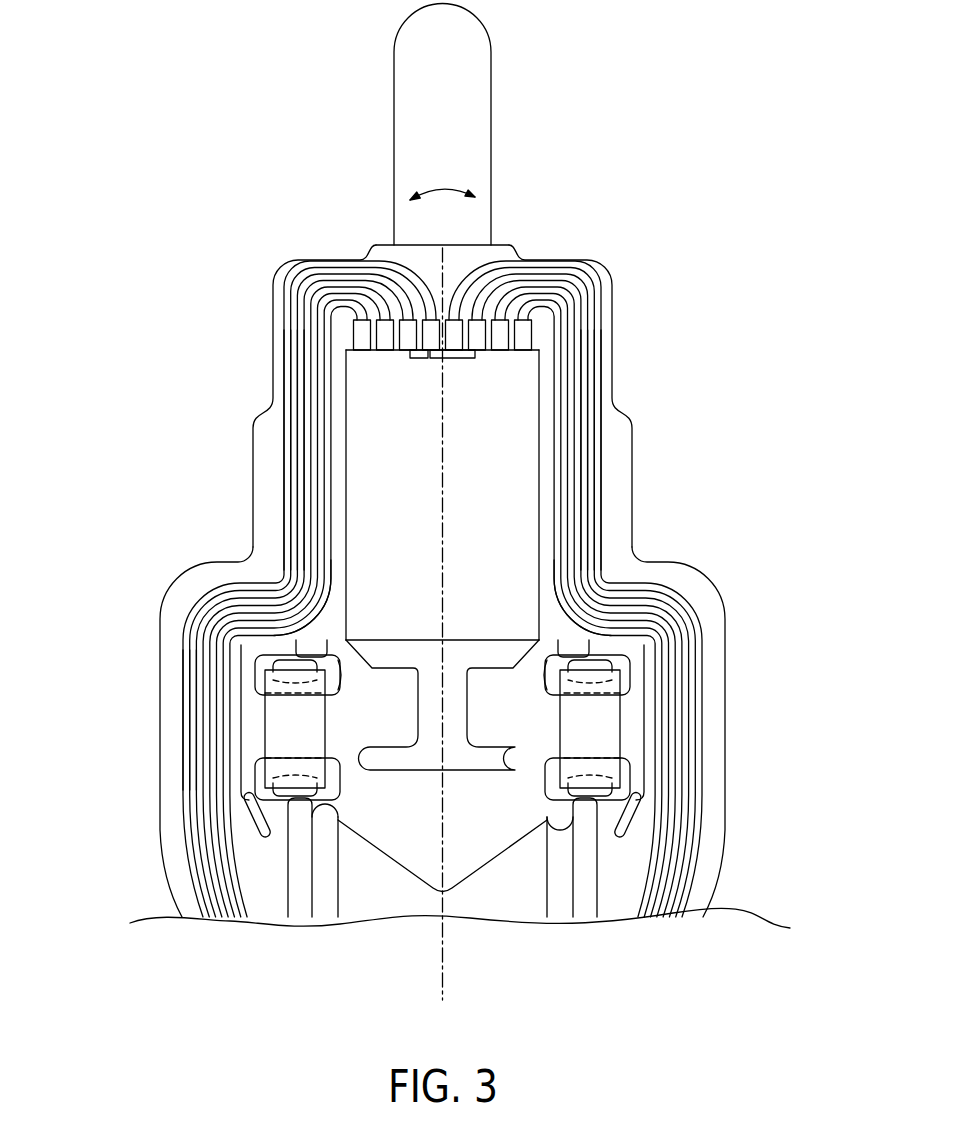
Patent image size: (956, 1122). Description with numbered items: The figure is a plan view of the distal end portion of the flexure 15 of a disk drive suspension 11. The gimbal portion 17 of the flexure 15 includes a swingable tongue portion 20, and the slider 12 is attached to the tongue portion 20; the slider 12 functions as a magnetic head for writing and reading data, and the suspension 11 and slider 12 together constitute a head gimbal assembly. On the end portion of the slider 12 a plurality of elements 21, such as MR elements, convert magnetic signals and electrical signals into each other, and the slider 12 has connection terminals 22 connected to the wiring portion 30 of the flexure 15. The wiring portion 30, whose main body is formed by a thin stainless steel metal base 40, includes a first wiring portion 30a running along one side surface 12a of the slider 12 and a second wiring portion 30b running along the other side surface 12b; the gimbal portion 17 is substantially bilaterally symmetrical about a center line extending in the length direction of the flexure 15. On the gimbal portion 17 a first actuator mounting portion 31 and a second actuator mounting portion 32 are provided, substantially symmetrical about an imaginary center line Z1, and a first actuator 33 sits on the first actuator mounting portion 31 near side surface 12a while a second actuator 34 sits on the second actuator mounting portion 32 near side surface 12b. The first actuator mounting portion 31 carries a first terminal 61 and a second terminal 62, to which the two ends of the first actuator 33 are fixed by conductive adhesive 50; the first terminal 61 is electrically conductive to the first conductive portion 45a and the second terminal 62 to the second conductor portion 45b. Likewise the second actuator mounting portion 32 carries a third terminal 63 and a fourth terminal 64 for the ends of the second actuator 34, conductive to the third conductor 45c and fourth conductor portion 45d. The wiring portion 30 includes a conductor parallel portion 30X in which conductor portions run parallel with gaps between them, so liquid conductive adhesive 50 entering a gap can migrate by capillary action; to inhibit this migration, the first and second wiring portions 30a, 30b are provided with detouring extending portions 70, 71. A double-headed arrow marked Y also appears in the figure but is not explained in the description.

The suspension 11 is at (562, 142).
The rotation direction Y is at (437, 187).
The connection terminals 22 is at (350, 333).
The gimbal portion 17 is at (550, 338).
The flexure 15 is at (260, 390).
The slider 12 is at (510, 400).
The elements 21 is at (420, 362).
The wiring portion 30 is at (614, 434).
The first wiring portion 30a is at (307, 473).
The second wiring portion 30b is at (590, 468).
The imaginary center line Z1 is at (455, 490).
The one side surface of the slider 12a is at (346, 513).
The other side surface of the slider 12b is at (540, 527).
The metal base 40 is at (655, 562).
The first conductive portion 45a is at (288, 642).
The second conductor portion 45b is at (300, 840).
The third conductor 45c is at (600, 640).
The fourth conductor portion 45d is at (600, 820).
The detouring extending portion 70 is at (322, 650).
The detouring extending portion 71 is at (563, 648).
The first terminal 61 is at (268, 672).
The second terminal 62 is at (270, 795).
The third terminal 63 is at (625, 670).
The fourth terminal 64 is at (605, 800).
The conductor parallel portion 30X is at (190, 698).
The first actuator 33 is at (285, 718).
The second actuator 34 is at (598, 718).
The first actuator mounting portion 31 is at (259, 749).
The second actuator mounting portion 32 is at (628, 748).
The conductive adhesive 50 is at (332, 658).
The tongue portion 20 is at (485, 655).